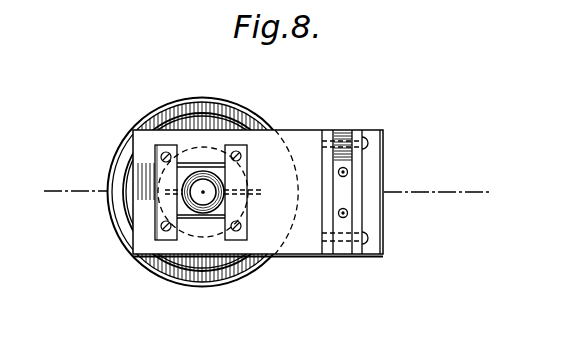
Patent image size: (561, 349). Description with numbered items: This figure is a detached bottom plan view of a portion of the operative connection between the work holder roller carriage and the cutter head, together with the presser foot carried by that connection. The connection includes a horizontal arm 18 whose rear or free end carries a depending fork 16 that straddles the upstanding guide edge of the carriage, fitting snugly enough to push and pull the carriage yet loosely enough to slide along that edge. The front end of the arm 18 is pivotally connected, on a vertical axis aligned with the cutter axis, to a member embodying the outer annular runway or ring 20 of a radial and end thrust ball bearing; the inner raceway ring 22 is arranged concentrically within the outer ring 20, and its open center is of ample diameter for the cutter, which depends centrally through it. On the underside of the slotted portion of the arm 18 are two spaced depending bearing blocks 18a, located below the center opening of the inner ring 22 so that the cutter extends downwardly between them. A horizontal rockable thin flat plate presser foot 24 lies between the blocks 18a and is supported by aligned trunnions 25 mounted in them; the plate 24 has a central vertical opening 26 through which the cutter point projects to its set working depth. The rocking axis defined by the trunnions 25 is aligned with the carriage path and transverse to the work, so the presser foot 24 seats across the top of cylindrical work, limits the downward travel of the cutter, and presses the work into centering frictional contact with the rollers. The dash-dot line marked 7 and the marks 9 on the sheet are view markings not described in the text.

The section line 7- 7 is at (267, 192).
The sheet reference 9 is at (199, 195).
The depending fork 16 is at (338, 135).
The horizontal arm 18 is at (313, 250).
The depending bearing blocks 18a is at (157, 150).
The outer annular runway or ring 20 is at (130, 228).
The inner raceway annulus or ring 22 is at (236, 130).
The presser foot 24 is at (200, 200).
The trunnions 25 is at (118, 202).
The central vertical opening 26 is at (207, 198).